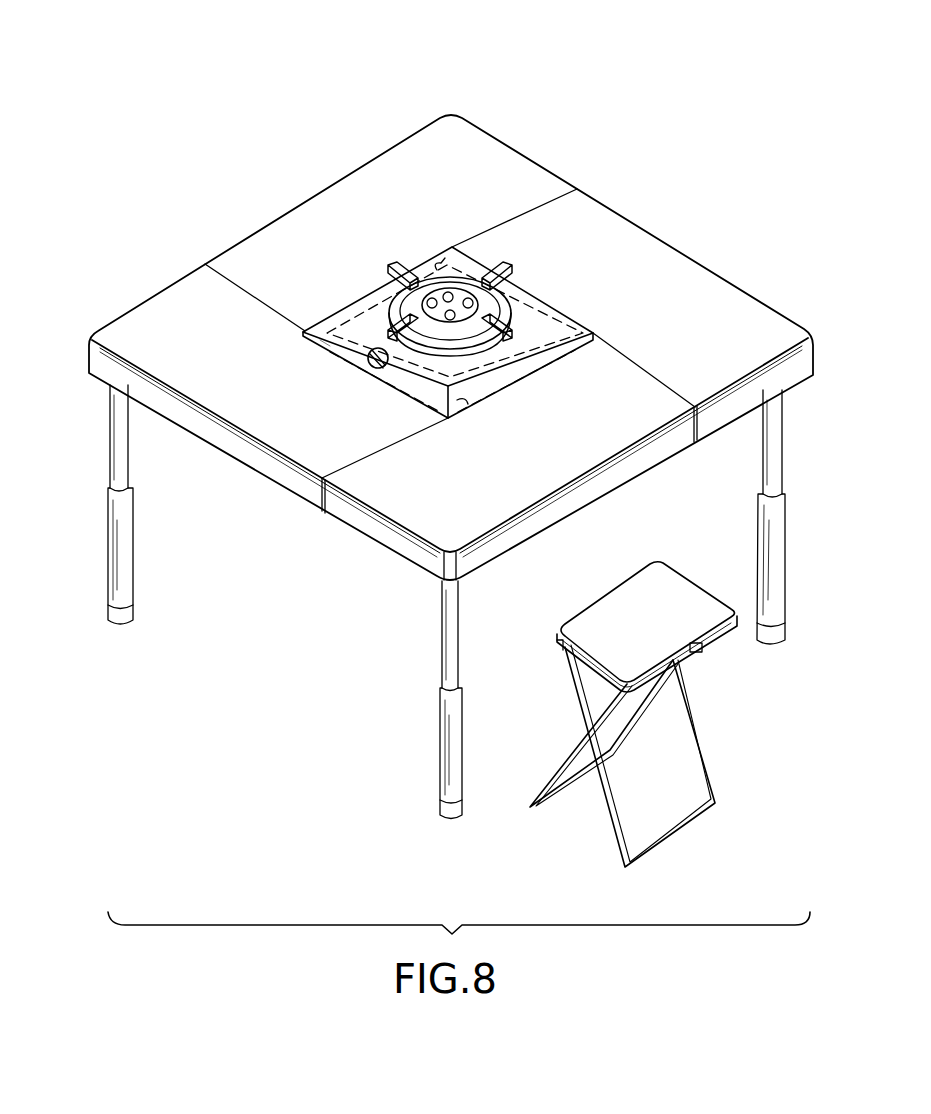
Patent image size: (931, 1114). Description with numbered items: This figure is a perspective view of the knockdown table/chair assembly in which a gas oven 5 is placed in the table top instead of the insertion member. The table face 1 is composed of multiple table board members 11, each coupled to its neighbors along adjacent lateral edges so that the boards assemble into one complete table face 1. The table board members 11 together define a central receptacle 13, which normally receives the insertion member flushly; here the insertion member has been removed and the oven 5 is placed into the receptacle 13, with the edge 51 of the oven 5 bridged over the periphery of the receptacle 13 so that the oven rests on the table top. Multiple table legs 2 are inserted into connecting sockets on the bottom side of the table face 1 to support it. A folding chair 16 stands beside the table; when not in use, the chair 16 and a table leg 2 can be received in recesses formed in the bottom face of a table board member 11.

The table face 1 is at (536, 136).
The table board member 11 is at (373, 188).
The central receptacle 13 is at (445, 240).
The oven 5 is at (525, 320).
The edge of the oven 51 is at (353, 307).
The table leg 2 is at (98, 451).
The folding chair 16 is at (612, 600).